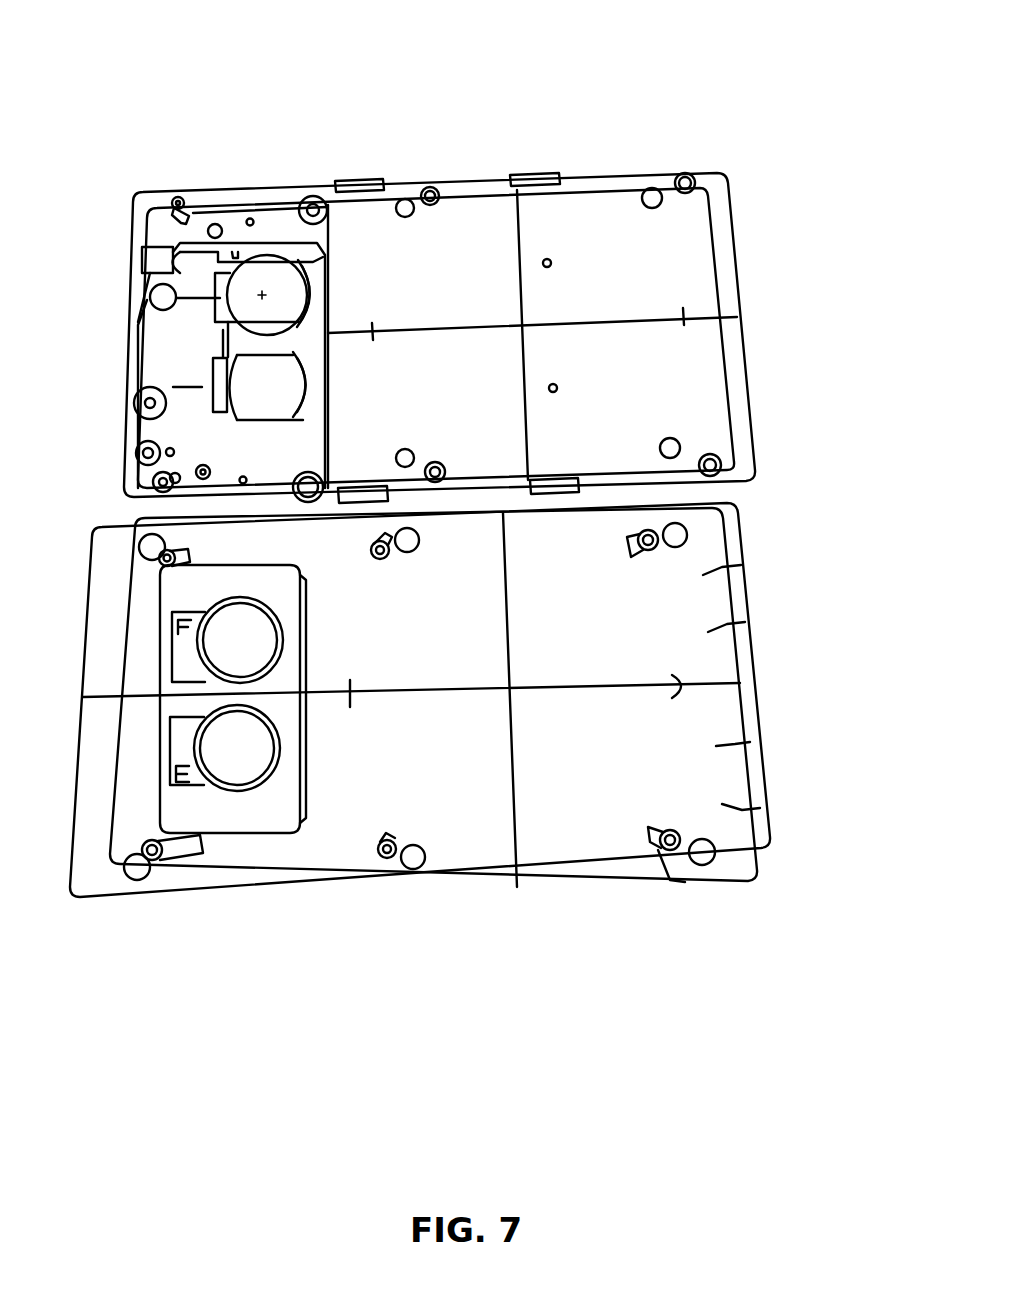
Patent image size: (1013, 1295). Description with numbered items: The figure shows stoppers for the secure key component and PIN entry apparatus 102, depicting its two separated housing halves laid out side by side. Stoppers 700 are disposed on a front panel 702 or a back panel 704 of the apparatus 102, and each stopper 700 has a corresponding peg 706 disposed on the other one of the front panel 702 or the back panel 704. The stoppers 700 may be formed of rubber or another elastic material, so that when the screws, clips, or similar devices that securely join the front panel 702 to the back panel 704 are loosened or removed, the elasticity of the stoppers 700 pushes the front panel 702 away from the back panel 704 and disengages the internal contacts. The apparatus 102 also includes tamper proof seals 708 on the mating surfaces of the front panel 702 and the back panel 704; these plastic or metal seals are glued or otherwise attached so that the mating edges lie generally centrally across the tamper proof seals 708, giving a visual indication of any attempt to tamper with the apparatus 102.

The apparatus 102 is at (166, 163).
The stoppers 700 is at (180, 573).
The front panel 702 is at (737, 607).
The back panel 704 is at (745, 345).
The pegs 706 is at (174, 470).
The tamper proof seals 708 is at (365, 195).